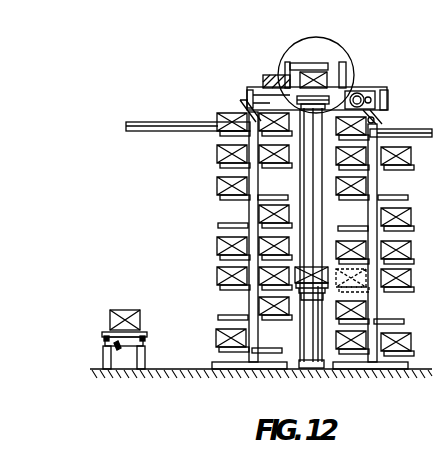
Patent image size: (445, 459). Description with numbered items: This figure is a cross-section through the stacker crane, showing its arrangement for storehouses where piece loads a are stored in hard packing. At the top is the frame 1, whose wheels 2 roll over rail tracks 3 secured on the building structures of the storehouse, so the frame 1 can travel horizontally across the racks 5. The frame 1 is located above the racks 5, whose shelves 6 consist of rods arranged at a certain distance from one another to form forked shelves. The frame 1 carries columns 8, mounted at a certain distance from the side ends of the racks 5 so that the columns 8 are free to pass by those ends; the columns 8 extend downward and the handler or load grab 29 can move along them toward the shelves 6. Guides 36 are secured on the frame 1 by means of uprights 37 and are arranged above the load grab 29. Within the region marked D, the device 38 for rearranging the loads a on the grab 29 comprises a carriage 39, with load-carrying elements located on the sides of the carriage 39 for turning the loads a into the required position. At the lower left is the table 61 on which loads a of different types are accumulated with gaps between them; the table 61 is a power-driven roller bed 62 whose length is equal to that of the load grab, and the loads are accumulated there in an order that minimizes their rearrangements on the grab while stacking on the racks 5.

The frame 1 is at (246, 92).
The wheels 2 is at (243, 110).
The rail tracks 3 is at (128, 131).
The racks 5 is at (378, 190).
The shelves 6 is at (397, 205).
The columns 8 is at (305, 369).
The load grab 29 is at (306, 298).
The guides 36 is at (346, 60).
The uprights 37 is at (360, 84).
The device for rearranging the loads 38 is at (317, 50).
The carriage 39 is at (290, 64).
The table 61 is at (146, 354).
The roller bed 62 is at (110, 358).
The detail circle D is at (344, 44).
The loads a is at (216, 247).